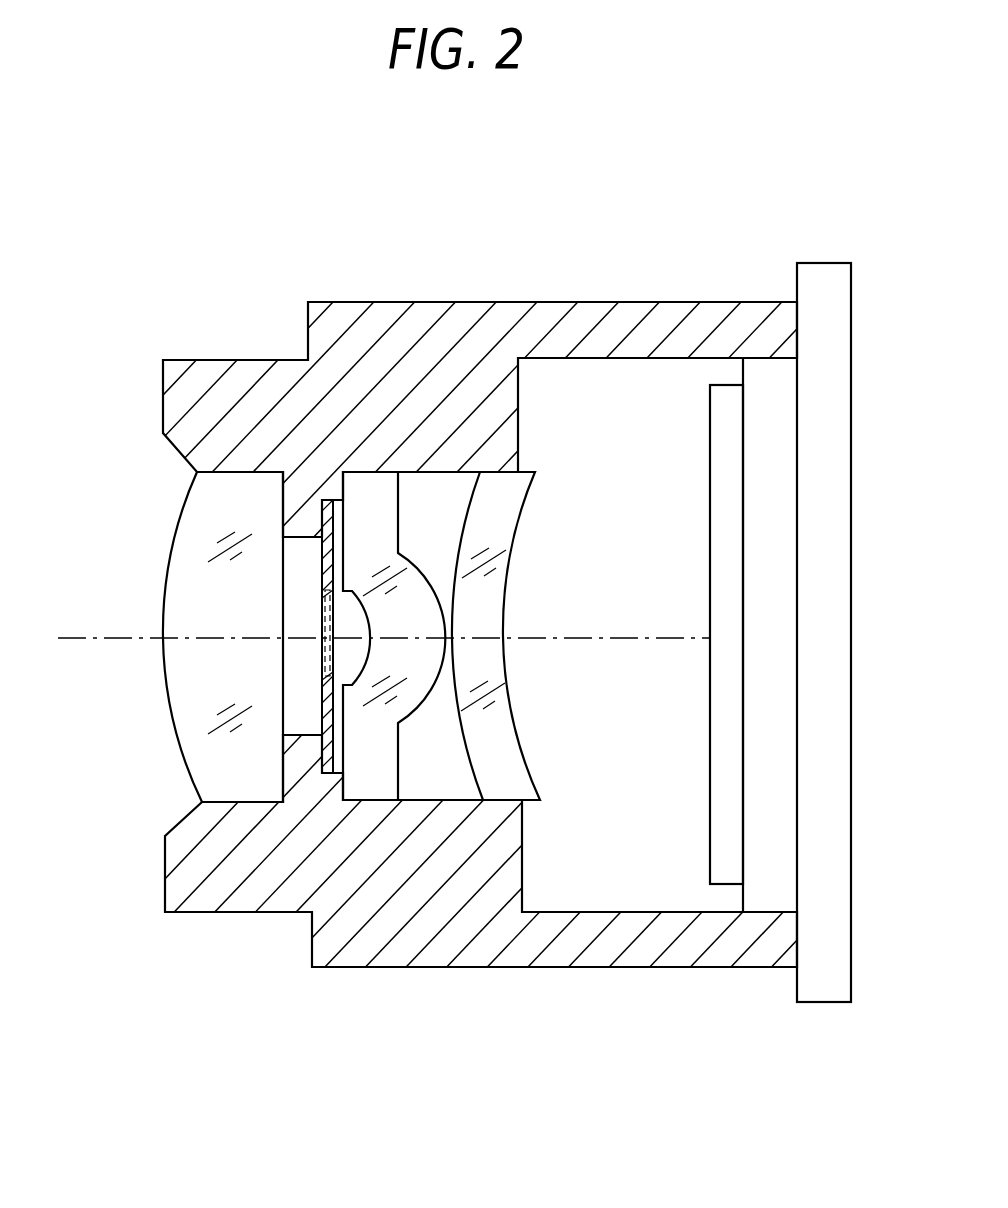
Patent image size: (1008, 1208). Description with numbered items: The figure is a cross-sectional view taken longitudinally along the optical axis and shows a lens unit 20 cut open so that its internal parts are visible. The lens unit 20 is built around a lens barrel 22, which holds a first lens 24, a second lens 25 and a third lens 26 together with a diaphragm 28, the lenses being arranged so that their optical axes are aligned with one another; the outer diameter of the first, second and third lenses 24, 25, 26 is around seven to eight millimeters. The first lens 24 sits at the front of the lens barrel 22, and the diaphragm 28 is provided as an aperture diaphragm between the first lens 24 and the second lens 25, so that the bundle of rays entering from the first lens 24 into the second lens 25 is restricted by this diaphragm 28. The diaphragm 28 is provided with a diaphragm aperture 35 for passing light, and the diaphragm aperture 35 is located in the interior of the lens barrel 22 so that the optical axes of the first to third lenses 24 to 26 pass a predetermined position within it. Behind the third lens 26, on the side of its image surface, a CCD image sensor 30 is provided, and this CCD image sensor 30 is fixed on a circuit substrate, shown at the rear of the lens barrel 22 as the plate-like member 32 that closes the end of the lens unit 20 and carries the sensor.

The lens unit 20 is at (153, 272).
The lens barrel 22 is at (428, 332).
The first lens 24 is at (185, 727).
The second lens 25 is at (365, 518).
The third lens 26 is at (497, 773).
The diaphragm 28 is at (324, 720).
The CCD image sensor 30 is at (723, 695).
The substrate 32 is at (765, 412).
The diaphragm aperture 35 is at (323, 633).